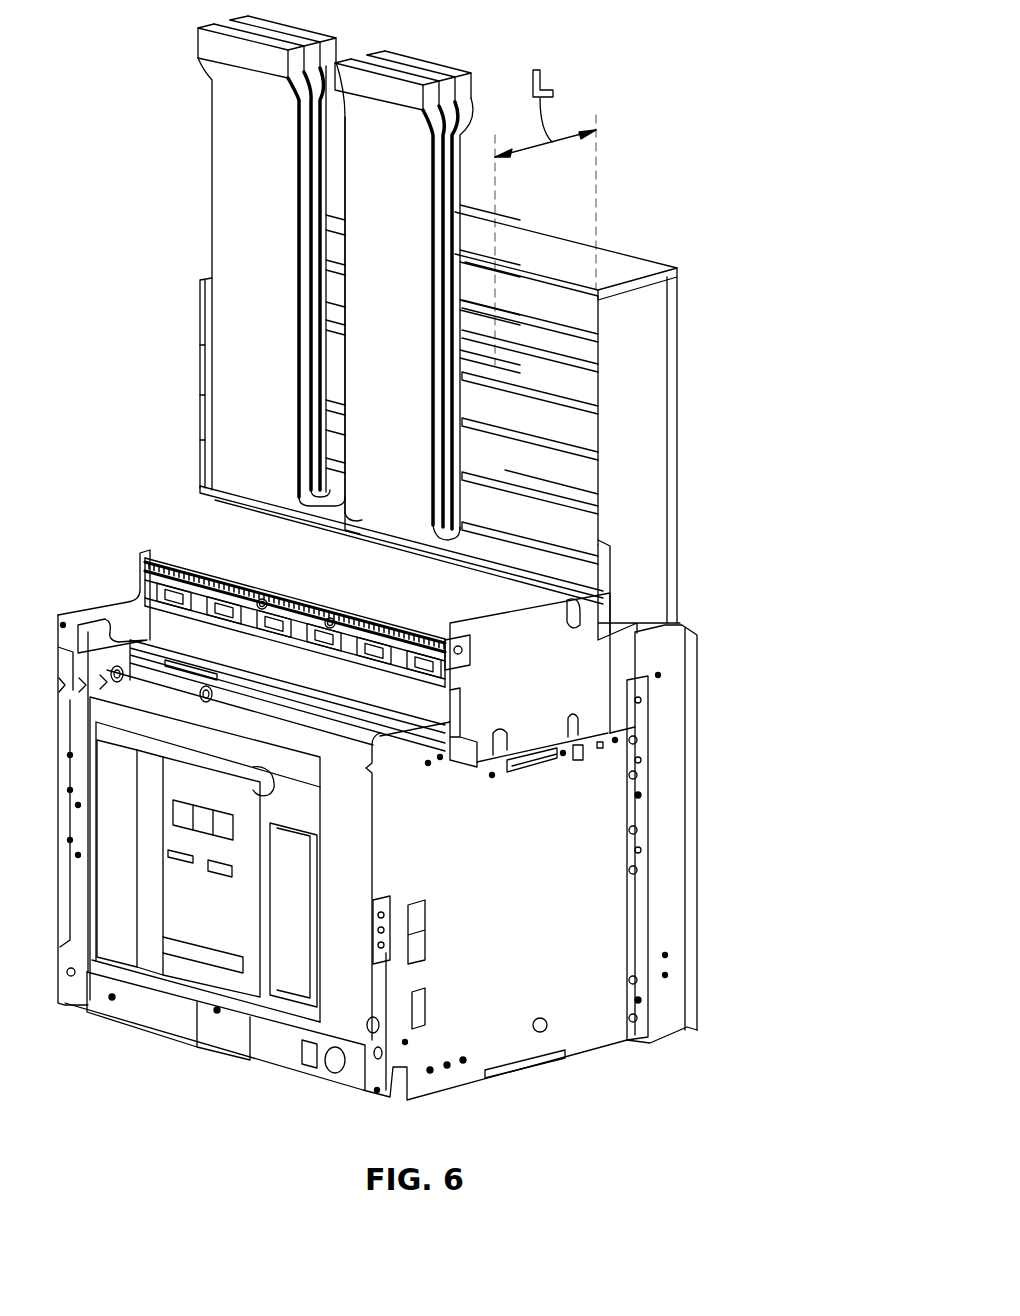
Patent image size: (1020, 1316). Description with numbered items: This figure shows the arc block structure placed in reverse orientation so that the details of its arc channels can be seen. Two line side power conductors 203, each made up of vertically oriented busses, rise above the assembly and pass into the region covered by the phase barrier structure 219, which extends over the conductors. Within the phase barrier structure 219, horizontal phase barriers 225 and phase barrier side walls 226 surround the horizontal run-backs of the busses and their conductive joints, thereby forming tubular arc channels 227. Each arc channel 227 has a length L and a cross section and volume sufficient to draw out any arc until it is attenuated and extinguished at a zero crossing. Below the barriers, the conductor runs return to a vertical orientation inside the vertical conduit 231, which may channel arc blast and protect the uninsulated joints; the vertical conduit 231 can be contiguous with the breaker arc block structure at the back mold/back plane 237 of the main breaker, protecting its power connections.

The line side power conductor 203 is at (233, 153).
The phase barrier structure 219 is at (632, 270).
The horizontal phase barrier 225 is at (517, 340).
The phase barrier side wall 226 is at (547, 452).
The arc channel 227 is at (497, 390).
The vertical conduit 231 is at (642, 585).
The back mold/back plane 237 is at (652, 1058).